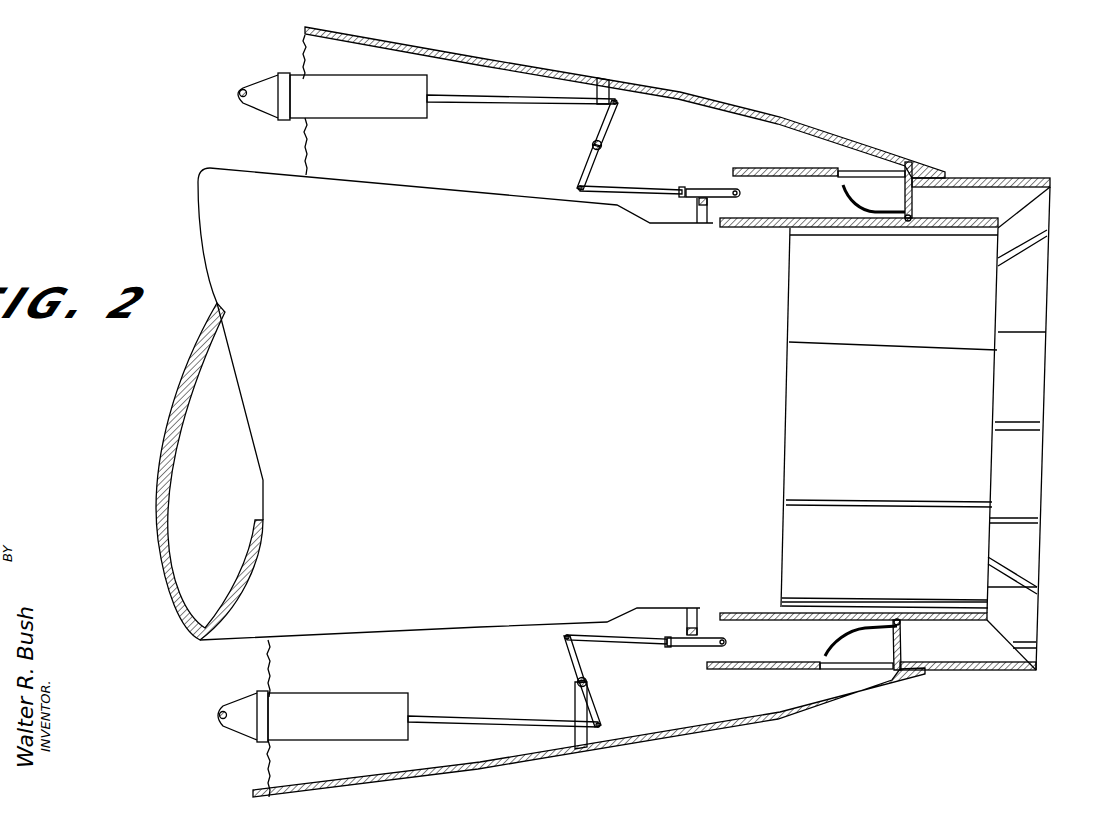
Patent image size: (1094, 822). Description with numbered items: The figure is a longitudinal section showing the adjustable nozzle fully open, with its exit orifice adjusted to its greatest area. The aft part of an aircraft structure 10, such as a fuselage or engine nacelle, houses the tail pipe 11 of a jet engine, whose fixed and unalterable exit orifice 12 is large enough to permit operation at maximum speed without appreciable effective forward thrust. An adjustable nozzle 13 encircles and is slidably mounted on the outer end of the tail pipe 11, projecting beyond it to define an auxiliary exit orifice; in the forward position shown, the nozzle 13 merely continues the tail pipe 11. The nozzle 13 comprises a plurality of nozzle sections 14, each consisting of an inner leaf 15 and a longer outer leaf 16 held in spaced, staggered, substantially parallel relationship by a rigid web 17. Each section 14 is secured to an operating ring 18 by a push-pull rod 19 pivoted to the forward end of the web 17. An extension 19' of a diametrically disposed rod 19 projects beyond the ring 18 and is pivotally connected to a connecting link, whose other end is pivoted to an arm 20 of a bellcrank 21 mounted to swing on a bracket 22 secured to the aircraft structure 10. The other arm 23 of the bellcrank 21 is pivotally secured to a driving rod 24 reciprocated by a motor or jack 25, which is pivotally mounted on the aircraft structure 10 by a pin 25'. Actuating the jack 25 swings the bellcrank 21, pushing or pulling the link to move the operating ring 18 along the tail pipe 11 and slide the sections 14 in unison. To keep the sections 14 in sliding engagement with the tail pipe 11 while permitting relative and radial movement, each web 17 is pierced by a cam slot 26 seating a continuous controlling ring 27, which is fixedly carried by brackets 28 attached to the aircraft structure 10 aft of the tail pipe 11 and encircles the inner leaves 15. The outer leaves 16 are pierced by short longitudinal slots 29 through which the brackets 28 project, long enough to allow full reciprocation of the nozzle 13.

The aircraft structure 10 is at (746, 108).
The tail pipe 11 is at (724, 382).
The exit orifice 12 is at (784, 432).
The adjustable nozzle 13 is at (980, 177).
The nozzle section 14 is at (1032, 382).
The inner leaf 15 is at (958, 230).
The outer leaf 16 is at (1002, 182).
The rigid web 17 is at (758, 172).
The operating ring 18 is at (697, 212).
The push-pull rod 19 is at (703, 420).
The rod extension 19' is at (691, 412).
The bellcrank arm 20 is at (584, 172).
The bellcrank 21 is at (602, 146).
The bracket 22 is at (596, 91).
The bellcrank arm 23 is at (610, 122).
The driving rod 24 is at (540, 112).
The motor or jack 25 is at (322, 402).
The pin 25' is at (221, 390).
The cam slot 26 is at (842, 190).
The controlling ring 27 is at (912, 219).
The bracket 28 is at (912, 198).
The longitudinal slot 29 is at (850, 172).